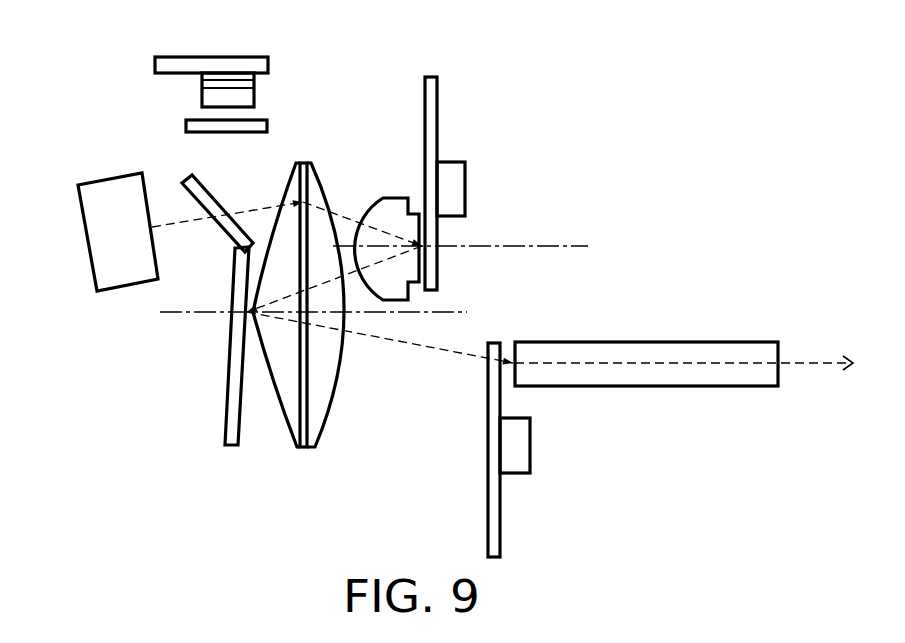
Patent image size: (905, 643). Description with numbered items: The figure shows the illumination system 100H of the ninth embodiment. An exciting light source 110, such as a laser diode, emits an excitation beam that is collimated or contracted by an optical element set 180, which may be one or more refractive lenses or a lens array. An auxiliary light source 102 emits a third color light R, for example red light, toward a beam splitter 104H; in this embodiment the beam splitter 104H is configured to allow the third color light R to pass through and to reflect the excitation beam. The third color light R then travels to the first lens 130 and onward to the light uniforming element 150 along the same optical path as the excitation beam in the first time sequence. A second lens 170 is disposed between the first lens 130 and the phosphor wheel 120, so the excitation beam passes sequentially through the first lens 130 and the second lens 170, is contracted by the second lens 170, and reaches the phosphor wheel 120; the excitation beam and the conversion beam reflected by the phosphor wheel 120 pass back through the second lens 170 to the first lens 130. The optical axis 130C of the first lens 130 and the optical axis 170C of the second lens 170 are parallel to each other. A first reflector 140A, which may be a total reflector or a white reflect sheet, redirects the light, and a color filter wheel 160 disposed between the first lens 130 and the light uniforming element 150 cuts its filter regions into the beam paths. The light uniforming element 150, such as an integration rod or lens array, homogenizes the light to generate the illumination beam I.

The illumination system 100H is at (80, 65).
The exciting light source 110 is at (268, 65).
The optical element set 180 is at (267, 126).
The auxiliary light source 102 is at (107, 192).
The third color light R is at (175, 222).
The beam splitter 104H is at (228, 227).
The first reflector 140A is at (228, 425).
The first lens 130 is at (298, 448).
The optical axis of the first lens 130C is at (450, 312).
The second lens 170 is at (389, 197).
The optical axis of the second lens 170C is at (565, 244).
The phosphor wheel 120 is at (437, 112).
The color filter wheel 160 is at (488, 508).
The light uniforming element 150 is at (648, 343).
The illumination beam I is at (812, 362).